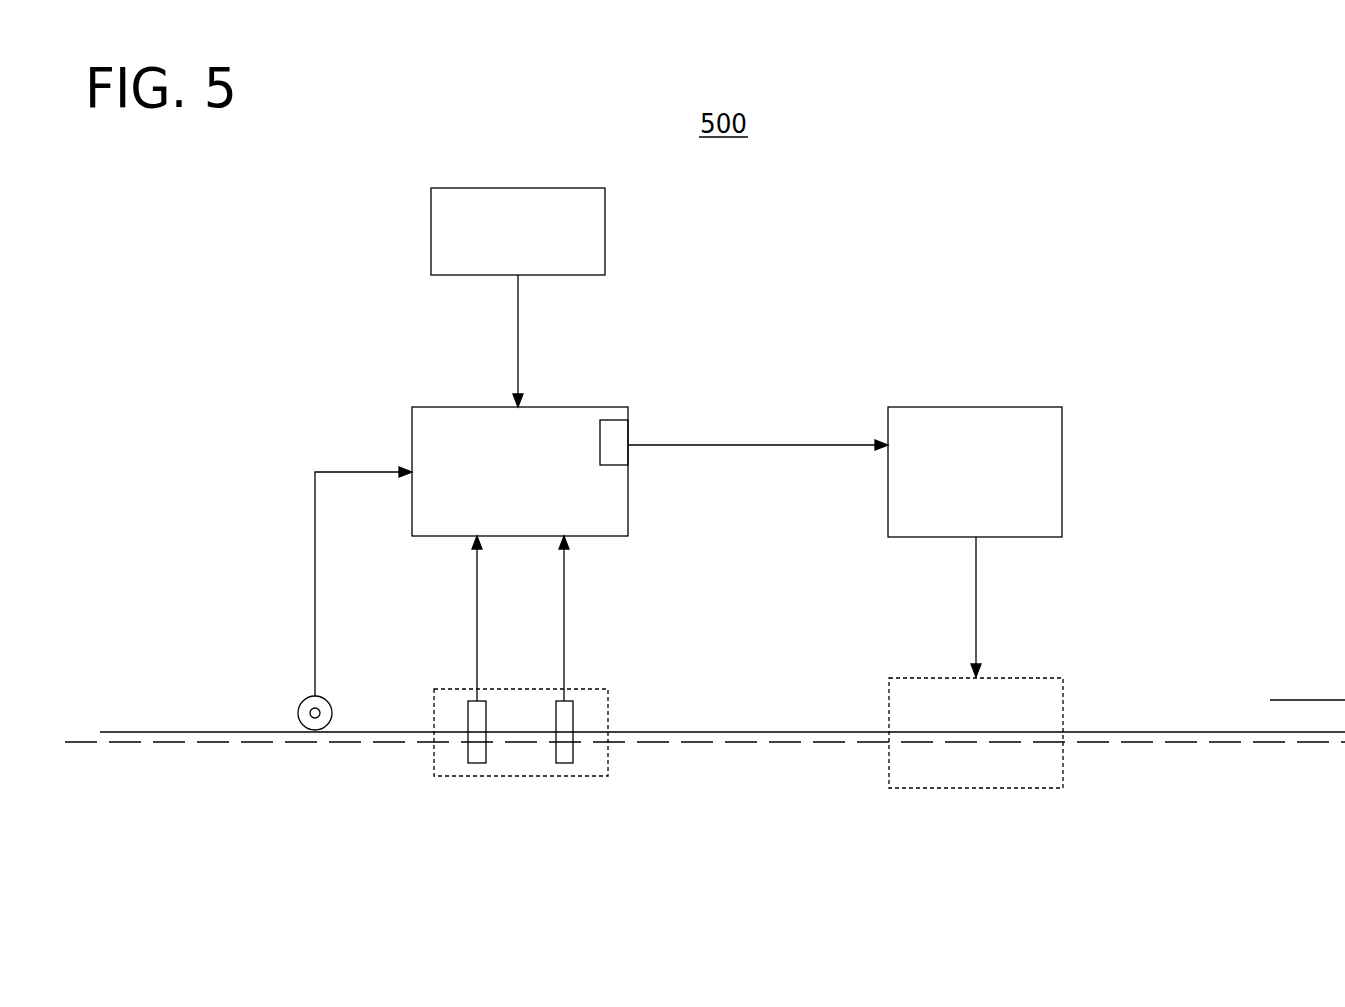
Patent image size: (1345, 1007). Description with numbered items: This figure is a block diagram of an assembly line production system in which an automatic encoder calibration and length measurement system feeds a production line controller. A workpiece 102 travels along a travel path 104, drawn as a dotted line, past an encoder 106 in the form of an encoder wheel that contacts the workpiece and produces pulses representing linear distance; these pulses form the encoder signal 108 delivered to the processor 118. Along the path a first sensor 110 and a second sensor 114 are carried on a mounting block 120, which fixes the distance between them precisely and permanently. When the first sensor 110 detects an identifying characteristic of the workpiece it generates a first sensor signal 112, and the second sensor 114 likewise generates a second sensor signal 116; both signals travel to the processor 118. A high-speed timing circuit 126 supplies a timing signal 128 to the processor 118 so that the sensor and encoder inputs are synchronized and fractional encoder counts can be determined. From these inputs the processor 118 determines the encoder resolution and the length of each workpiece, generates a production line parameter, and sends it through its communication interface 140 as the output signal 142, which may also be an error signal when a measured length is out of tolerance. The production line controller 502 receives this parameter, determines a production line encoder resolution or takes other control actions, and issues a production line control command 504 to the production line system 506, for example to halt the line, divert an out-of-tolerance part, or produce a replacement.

The workpiece 102 is at (655, 730).
The travel path 104 is at (745, 745).
The encoder 106 is at (328, 702).
The encoder signal 108 is at (315, 572).
The first sensor 110 is at (486, 745).
The first sensor signal 112 is at (477, 592).
The second sensor 114 is at (573, 750).
The second sensor signal 116 is at (564, 618).
The processor 118 is at (560, 407).
The mounting block 120 is at (434, 760).
The timing circuit 126 is at (605, 230).
The timing signal 128 is at (518, 322).
The communication interface 140 is at (628, 455).
The output signal 142 is at (732, 445).
The production line controller 502 is at (975, 407).
The production line control command 504 is at (976, 607).
The production line system 506 is at (1063, 770).